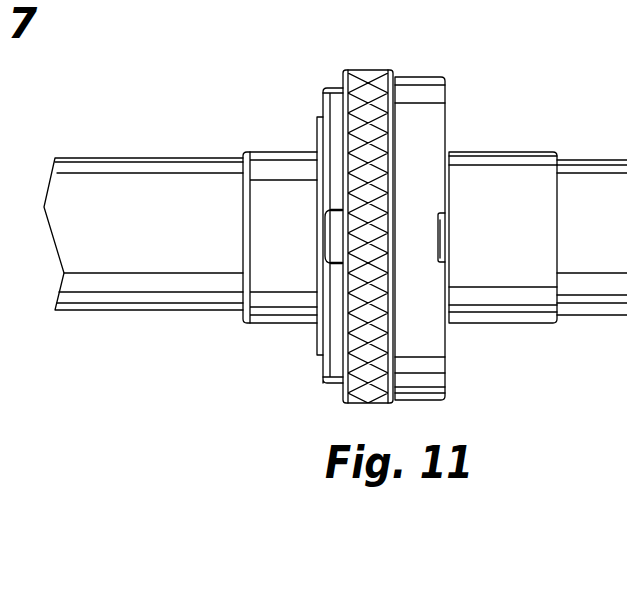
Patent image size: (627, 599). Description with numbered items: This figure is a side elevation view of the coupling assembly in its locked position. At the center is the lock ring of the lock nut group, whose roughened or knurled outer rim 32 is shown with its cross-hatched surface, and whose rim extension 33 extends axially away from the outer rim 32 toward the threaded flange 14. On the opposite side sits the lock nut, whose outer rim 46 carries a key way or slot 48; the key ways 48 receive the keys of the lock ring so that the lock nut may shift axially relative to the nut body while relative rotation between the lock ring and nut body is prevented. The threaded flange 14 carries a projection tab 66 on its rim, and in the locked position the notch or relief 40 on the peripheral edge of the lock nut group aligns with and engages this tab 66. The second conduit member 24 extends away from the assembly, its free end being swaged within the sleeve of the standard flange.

The threaded flange 14 is at (477, 122).
The second conduit member 24 is at (140, 188).
The outer rim 32 is at (375, 75).
The rim extension 33 is at (413, 78).
The notches or reliefs 40 is at (438, 231).
The outer rim of lock nut 46 is at (340, 88).
The key ways or slots 48 is at (335, 238).
The projection tabs 66 is at (445, 242).